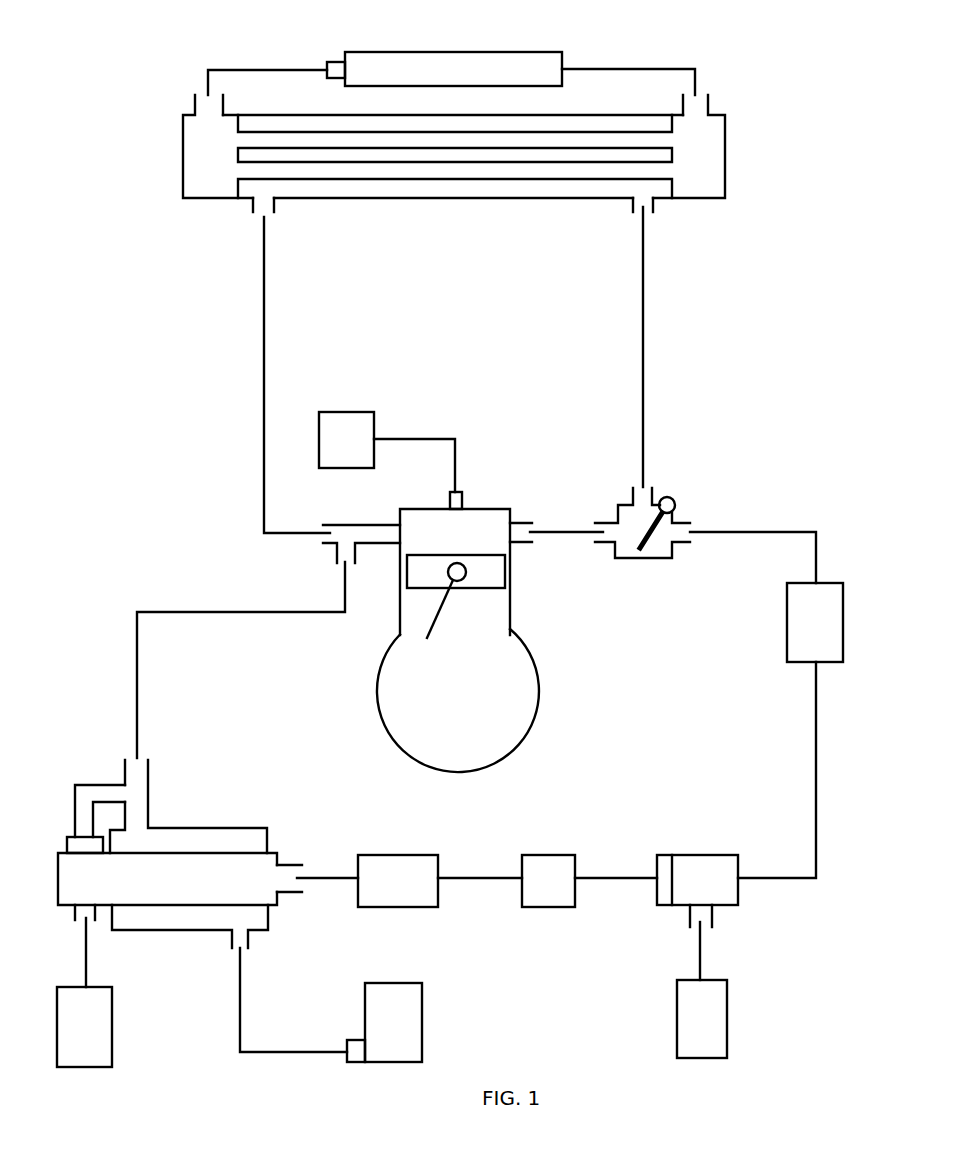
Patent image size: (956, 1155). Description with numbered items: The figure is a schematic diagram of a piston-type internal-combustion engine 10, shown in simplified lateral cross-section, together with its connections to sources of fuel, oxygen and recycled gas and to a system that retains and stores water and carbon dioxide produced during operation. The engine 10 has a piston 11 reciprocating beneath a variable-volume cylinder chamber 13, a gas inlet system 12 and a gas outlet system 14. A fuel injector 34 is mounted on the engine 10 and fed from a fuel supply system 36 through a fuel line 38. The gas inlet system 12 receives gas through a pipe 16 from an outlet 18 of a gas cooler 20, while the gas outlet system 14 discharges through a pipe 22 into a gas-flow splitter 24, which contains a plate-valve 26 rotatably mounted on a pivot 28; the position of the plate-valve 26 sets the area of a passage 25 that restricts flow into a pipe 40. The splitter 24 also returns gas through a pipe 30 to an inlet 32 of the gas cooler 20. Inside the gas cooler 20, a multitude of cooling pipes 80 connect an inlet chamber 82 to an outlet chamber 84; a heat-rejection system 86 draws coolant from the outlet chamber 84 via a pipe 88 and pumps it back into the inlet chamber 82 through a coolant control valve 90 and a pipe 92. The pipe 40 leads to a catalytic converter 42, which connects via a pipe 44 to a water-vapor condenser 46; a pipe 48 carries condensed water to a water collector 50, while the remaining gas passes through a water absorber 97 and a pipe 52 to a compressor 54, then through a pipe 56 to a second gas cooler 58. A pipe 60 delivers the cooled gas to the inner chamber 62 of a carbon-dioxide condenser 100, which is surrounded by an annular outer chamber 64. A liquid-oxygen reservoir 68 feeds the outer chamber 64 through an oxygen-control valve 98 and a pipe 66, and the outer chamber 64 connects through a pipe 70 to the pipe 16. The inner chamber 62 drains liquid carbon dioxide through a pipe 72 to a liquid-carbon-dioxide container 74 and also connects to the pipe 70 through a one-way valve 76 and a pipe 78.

The engine 10 is at (530, 693).
The piston 11 is at (427, 578).
The gas inlet system 12 is at (388, 527).
The cylinder chamber 13 is at (437, 527).
The gas outlet system 14 is at (520, 523).
The pipe 16 is at (262, 380).
The outlet 18 is at (277, 203).
The gas cooler 20 is at (447, 197).
The pipe 22 is at (575, 530).
The gas-flow splitter 24 is at (615, 505).
The passage 25 is at (647, 545).
The plate-valve 26 is at (670, 540).
The pivot 28 is at (675, 505).
The pipe 30 is at (645, 373).
The inlet 32 is at (632, 203).
The fuel injector 34 is at (463, 493).
The fuel supply system 36 is at (347, 412).
The fuel line 38 is at (437, 445).
The pipe 40 is at (793, 538).
The catalytic converter 42 is at (807, 640).
The pipe 44 is at (818, 805).
The water-vapor condenser 46 is at (705, 858).
The pipe 48 is at (697, 940).
The water collector 50 is at (672, 1010).
The pipe 52 is at (613, 880).
The compressor 54 is at (543, 862).
The pipe 56 is at (487, 880).
The gas cooler 58 is at (408, 863).
The pipe 60 is at (342, 877).
The inner chamber 62 is at (258, 882).
The outer chamber 64 is at (247, 830).
The pipe 66 is at (237, 983).
The liquid-oxygen reservoir 68 is at (408, 1015).
The pipe 70 is at (142, 698).
The pipe 72 is at (88, 952).
The liquid-carbon-dioxide container 74 is at (113, 1018).
The one-way valve 76 is at (65, 835).
The pipe 78 is at (98, 783).
The cooling pipes 80 is at (252, 177).
The inlet chamber 82 is at (218, 178).
The outlet chamber 84 is at (709, 173).
The heat-rejection system 86 is at (562, 53).
The pipe 88 is at (695, 69).
The coolant control valve 90 is at (327, 58).
The pipe 92 is at (227, 62).
The water absorber 97 is at (658, 857).
The oxygen-control valve 98 is at (345, 1047).
The carbon-dioxide condenser 100 is at (232, 805).